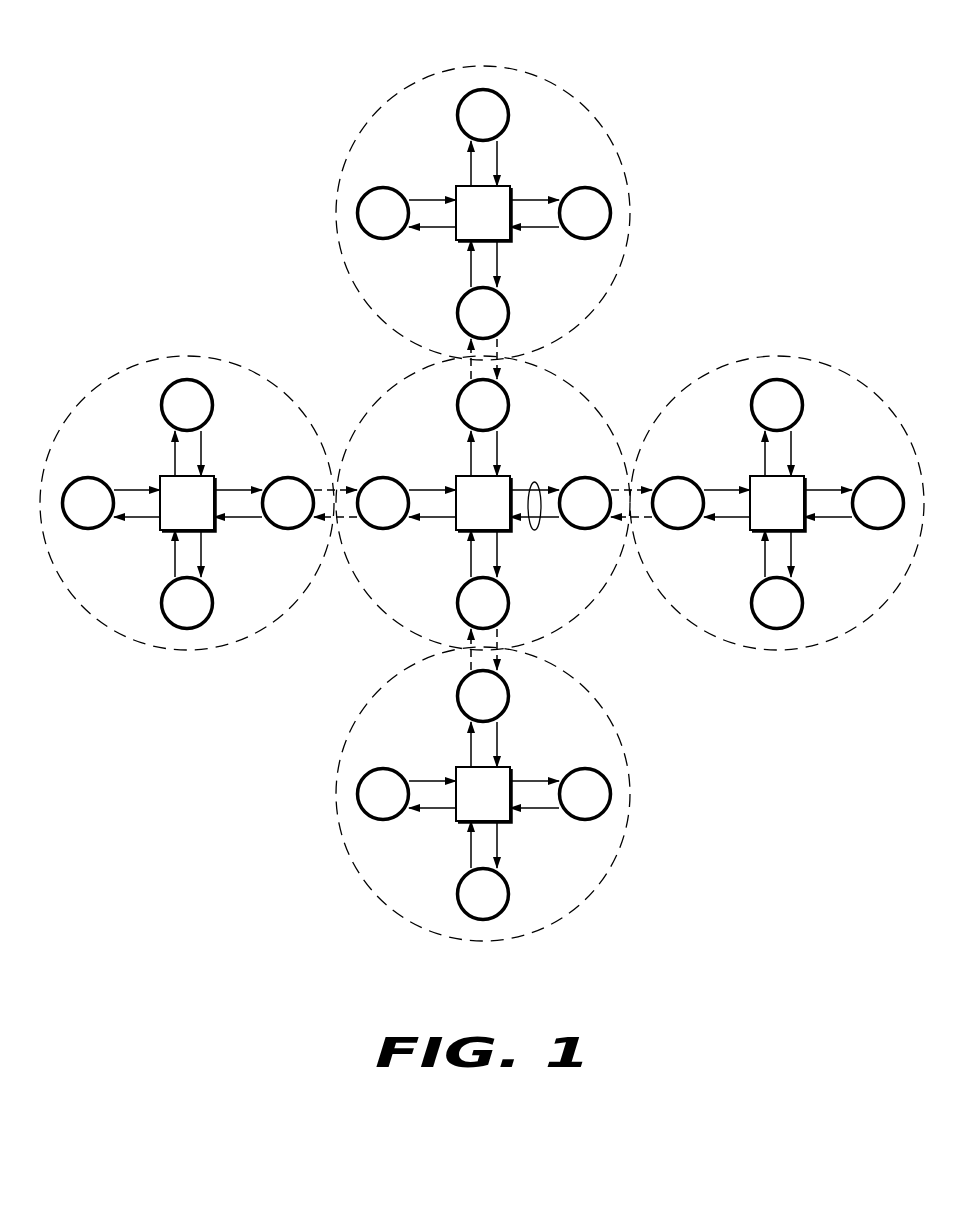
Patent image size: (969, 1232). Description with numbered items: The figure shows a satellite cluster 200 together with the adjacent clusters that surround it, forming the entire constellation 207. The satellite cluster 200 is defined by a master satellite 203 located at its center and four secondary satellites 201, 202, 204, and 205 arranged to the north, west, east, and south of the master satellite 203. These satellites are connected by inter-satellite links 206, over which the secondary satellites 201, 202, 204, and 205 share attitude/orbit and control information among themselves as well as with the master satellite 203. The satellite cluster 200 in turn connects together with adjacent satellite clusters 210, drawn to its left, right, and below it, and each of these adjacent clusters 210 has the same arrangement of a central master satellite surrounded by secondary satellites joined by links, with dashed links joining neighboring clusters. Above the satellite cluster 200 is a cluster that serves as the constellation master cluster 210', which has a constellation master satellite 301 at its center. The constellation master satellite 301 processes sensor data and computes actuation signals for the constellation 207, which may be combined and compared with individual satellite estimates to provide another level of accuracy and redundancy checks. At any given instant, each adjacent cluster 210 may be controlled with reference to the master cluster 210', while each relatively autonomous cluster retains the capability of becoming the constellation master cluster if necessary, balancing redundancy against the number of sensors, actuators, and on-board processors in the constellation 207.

The satellite cluster 200 is at (572, 389).
The secondary satellite 201 is at (458, 406).
The secondary satellite 202 is at (383, 529).
The master satellite 203 is at (456, 477).
The secondary satellite 204 is at (578, 478).
The secondary satellite 205 is at (510, 601).
The inter-satellite link 206 is at (534, 482).
The constellation 207 is at (295, 987).
The adjacent satellite cluster 210 is at (482, 628).
The constellation master cluster 210' is at (483, 191).
The constellation master satellite 301 is at (456, 186).